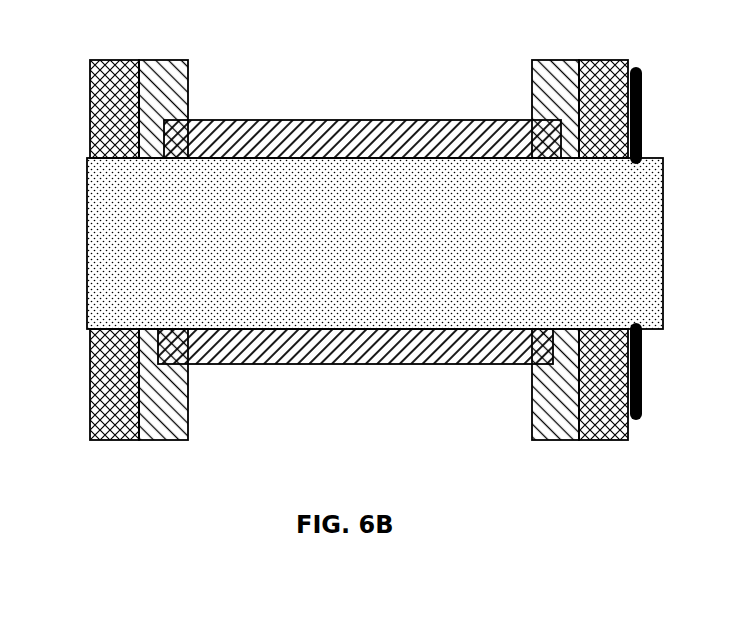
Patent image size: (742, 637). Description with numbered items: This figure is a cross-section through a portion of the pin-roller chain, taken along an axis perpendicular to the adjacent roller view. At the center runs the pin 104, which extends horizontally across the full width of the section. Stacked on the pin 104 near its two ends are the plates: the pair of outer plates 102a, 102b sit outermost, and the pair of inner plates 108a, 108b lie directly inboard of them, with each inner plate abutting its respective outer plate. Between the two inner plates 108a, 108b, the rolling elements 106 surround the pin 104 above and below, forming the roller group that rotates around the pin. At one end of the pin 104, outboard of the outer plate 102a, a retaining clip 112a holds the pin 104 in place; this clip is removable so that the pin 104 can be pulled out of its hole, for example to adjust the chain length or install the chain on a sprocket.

The outer plate 102a is at (593, 60).
The outer plate 102b is at (104, 60).
The pin 104 is at (664, 210).
The rolling element 106 is at (345, 120).
The inner plate 108a is at (538, 60).
The inner plate 108b is at (178, 60).
The retaining clip 112a is at (643, 78).